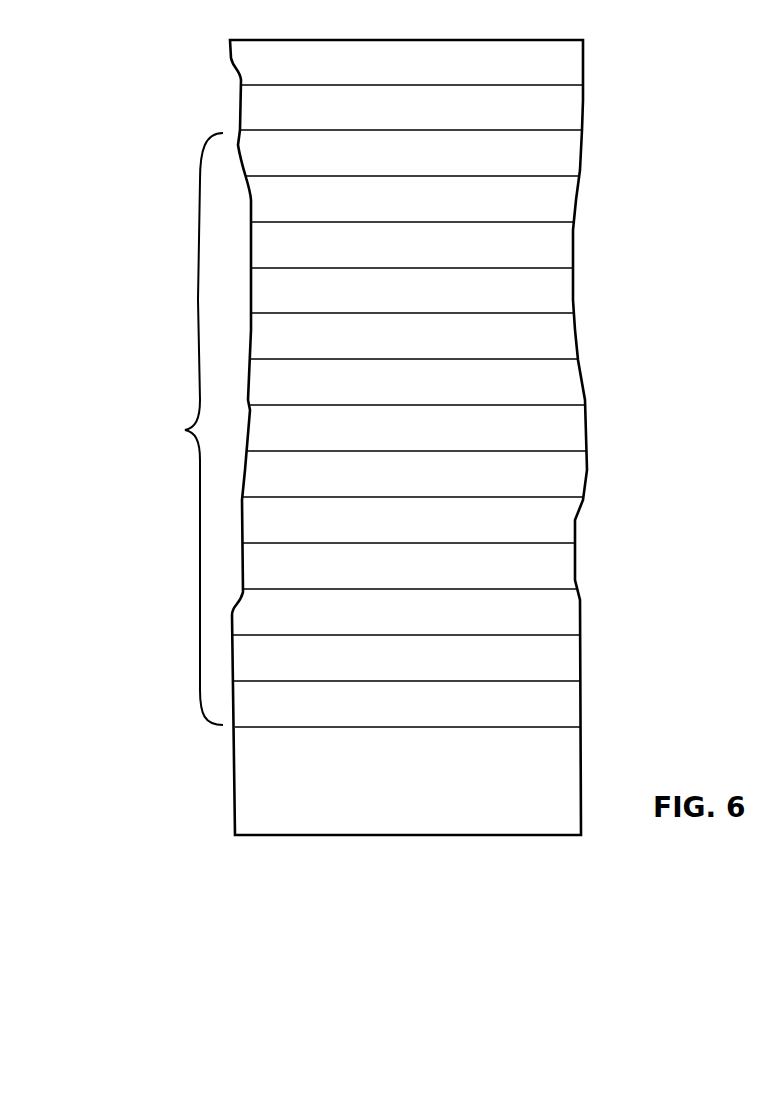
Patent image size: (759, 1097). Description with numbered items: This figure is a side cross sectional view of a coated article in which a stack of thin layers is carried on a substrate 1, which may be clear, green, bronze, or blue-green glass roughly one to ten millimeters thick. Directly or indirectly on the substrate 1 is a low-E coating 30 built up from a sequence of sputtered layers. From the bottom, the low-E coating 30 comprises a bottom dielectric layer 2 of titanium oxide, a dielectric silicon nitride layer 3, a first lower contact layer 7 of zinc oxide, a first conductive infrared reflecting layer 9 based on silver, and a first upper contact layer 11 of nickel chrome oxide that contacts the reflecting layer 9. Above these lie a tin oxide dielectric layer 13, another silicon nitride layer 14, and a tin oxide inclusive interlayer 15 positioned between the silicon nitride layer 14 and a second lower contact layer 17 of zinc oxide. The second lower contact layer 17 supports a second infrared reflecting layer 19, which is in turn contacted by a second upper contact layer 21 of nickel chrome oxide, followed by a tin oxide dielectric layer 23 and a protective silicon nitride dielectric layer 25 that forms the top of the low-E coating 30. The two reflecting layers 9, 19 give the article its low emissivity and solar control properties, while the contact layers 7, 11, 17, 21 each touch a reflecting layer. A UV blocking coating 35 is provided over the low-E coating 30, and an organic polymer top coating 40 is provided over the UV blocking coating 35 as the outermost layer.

The substrate 1 is at (553, 790).
The bottom dielectric layer 2 is at (553, 695).
The dielectric silicon nitride layer 3 is at (558, 655).
The first lower contact layer 7 is at (556, 610).
The first infrared reflecting layer 9 is at (562, 562).
The first upper contact layer 11 is at (560, 520).
The dielectric layer 13 is at (575, 468).
The silicon nitride layer 14 is at (578, 428).
The tin oxide inclusive interlayer 15 is at (575, 382).
The second lower contact layer 17 is at (560, 337).
The second infrared reflecting layer 19 is at (572, 294).
The second upper contact layer 21 is at (558, 245).
The dielectric layer 23 is at (562, 198).
The protective dielectric layer 25 is at (560, 157).
The low-E coating 30 is at (191, 447).
The UV blocking coating 35 is at (570, 108).
The organic polymer top coating 40 is at (577, 62).